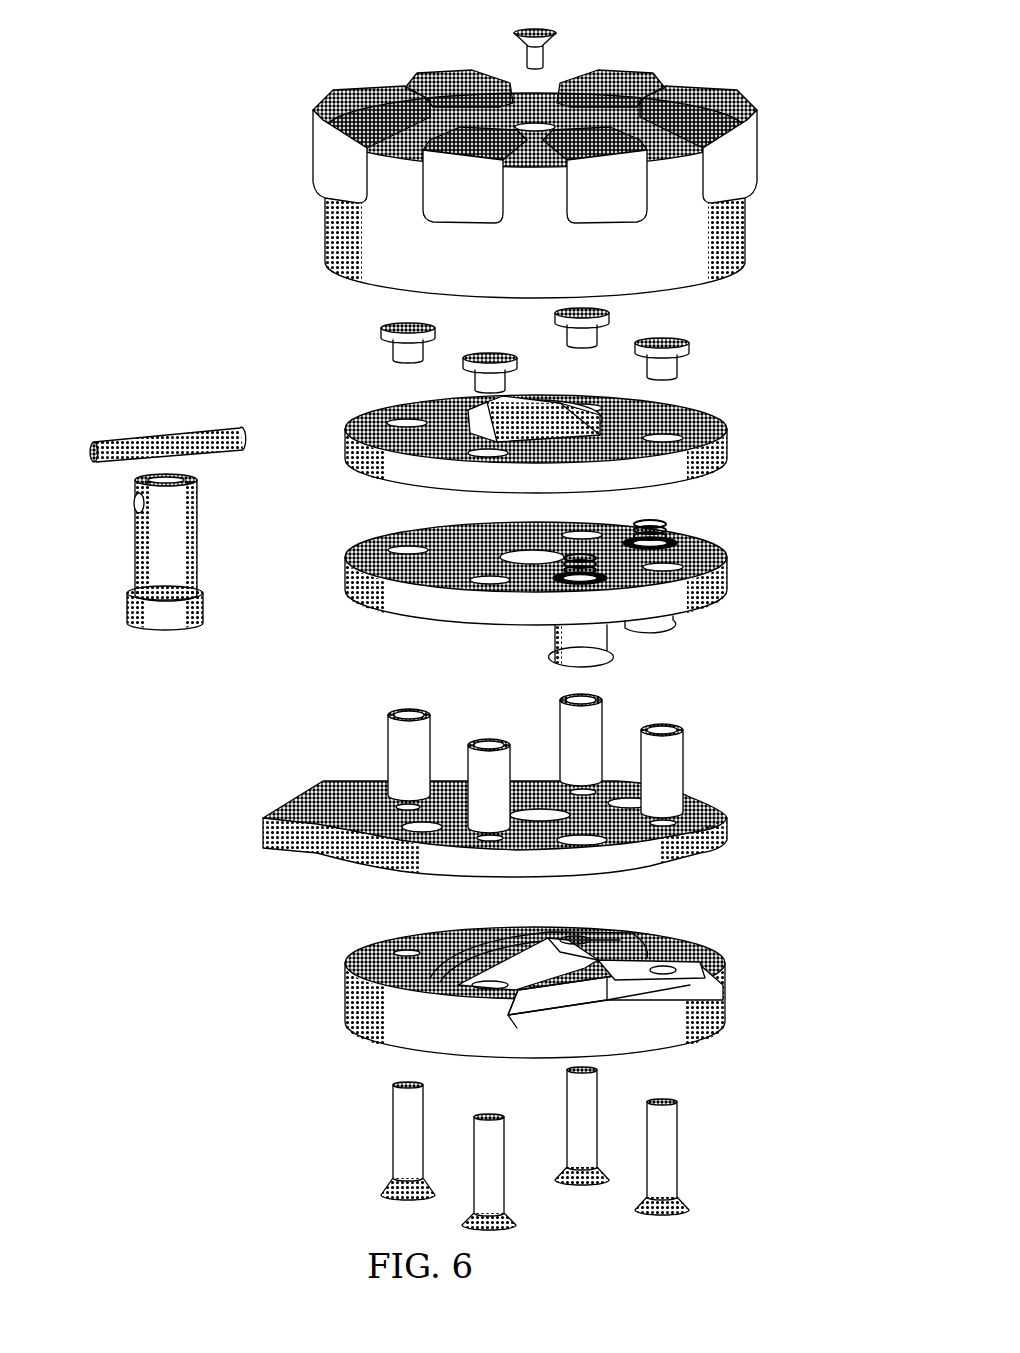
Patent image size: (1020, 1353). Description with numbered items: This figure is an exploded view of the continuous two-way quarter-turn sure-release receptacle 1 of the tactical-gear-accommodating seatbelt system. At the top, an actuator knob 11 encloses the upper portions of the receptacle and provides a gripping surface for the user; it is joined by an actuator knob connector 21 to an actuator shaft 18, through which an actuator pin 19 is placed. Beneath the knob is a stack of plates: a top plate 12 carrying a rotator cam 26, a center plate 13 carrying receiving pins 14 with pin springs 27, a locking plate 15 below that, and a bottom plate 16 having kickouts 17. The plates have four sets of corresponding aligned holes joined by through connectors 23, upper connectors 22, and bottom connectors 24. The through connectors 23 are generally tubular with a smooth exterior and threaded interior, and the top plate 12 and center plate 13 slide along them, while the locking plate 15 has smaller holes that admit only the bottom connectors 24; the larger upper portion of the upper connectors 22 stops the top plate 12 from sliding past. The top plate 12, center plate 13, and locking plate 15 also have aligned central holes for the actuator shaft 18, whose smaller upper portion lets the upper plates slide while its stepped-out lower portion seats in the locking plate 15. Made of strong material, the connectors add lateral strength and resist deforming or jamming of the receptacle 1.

The continuous two-way quarter-turn sure-release receptacle 1 is at (143, 88).
The actuator knob 11 is at (735, 250).
The top plate 12 is at (554, 428).
The center plate 13 is at (554, 587).
The receiving pins 14 is at (658, 623).
The locking plate 15 is at (514, 785).
The bottom plate 16 is at (556, 989).
The kickouts 17 is at (643, 953).
The actuator shaft 18 is at (188, 550).
The actuator pin 19 is at (208, 435).
The actuator knob connector 21 is at (547, 55).
The upper connectors 22 is at (688, 348).
The through connectors 23 is at (675, 753).
The bottom connectors 24 is at (672, 1152).
The rotator cam 26 is at (525, 402).
The pin springs 27 is at (658, 523).